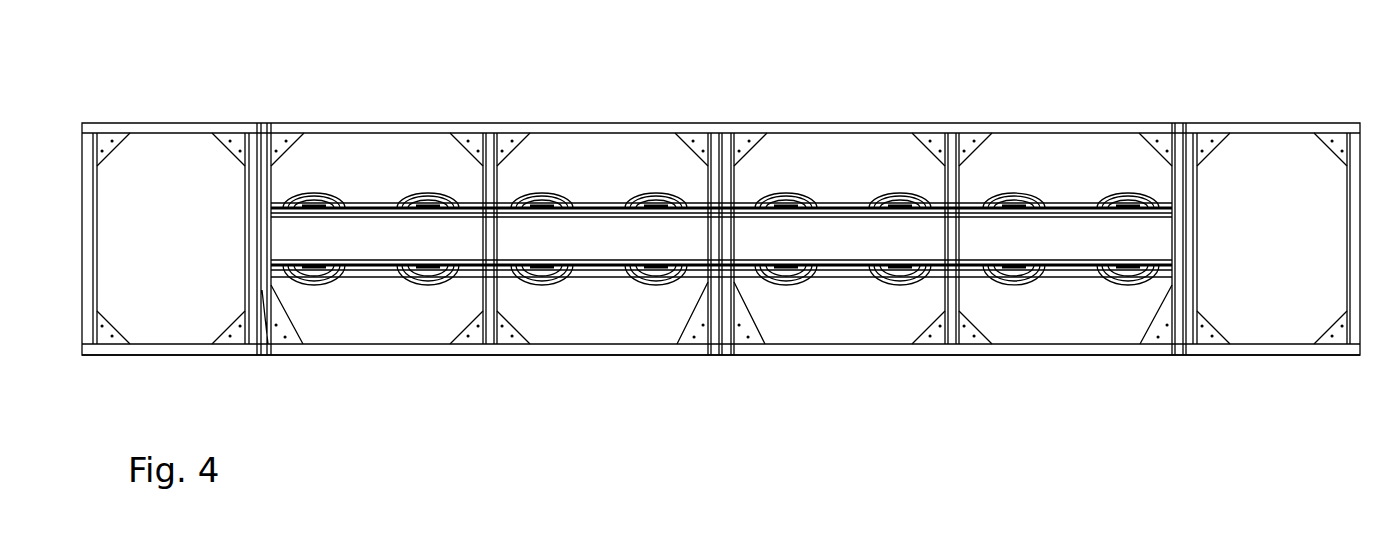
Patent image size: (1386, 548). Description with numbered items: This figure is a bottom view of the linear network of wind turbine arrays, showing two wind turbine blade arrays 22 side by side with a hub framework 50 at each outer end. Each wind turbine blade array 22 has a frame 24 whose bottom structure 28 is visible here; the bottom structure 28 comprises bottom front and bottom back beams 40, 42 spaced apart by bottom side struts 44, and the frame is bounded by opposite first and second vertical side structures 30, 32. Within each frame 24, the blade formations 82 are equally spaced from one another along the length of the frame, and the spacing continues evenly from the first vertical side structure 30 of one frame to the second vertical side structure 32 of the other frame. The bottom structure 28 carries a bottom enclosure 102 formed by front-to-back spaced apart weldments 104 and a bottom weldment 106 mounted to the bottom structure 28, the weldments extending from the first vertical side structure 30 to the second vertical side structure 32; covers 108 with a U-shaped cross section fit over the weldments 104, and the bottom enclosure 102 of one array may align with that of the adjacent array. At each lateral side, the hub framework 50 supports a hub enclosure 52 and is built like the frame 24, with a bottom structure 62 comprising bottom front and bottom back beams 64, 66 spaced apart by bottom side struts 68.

The wind turbine blade array 22 is at (423, 123).
The frame 24 is at (692, 107).
The bottom structure 28 is at (798, 107).
The first vertical side structure 30 is at (277, 355).
The second vertical side structure 32 is at (697, 355).
The bottom front beam 40 is at (721, 196).
The bottom back beam 42 is at (485, 355).
The bottom side struts 44 is at (722, 368).
The hub framework 50 is at (721, 184).
The hub enclosure 52 is at (150, 152).
The bottom structure of hub framework 62 is at (721, 89).
The bottom front beam of hub framework 64 is at (197, 130).
The bottom back beam of hub framework 66 is at (168, 355).
The bottom side struts of hub framework 68 is at (97, 240).
The blade formation 82 is at (549, 282).
The bottom enclosure 102 is at (617, 233).
The front and back weldments 104 is at (360, 268).
The bottom weldment 106 is at (413, 250).
The cover 108 is at (721, 152).